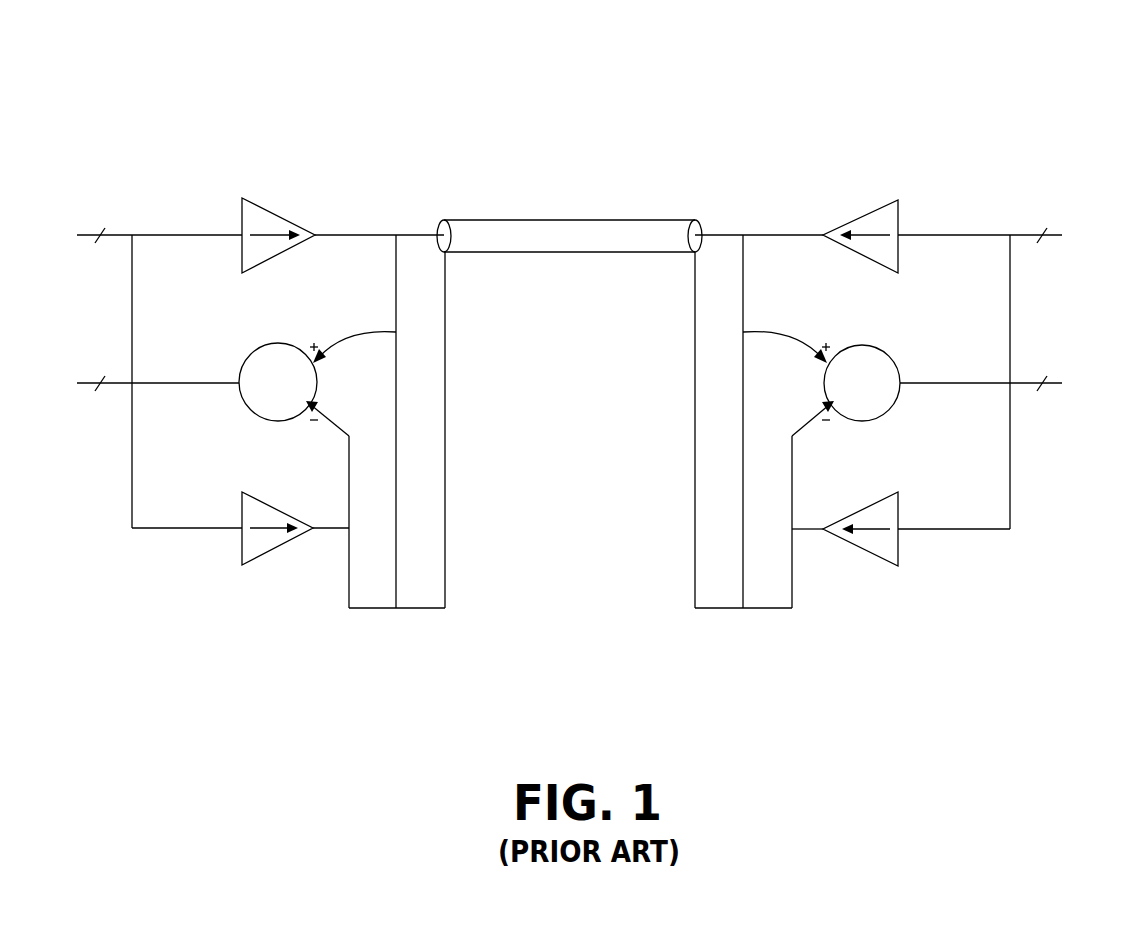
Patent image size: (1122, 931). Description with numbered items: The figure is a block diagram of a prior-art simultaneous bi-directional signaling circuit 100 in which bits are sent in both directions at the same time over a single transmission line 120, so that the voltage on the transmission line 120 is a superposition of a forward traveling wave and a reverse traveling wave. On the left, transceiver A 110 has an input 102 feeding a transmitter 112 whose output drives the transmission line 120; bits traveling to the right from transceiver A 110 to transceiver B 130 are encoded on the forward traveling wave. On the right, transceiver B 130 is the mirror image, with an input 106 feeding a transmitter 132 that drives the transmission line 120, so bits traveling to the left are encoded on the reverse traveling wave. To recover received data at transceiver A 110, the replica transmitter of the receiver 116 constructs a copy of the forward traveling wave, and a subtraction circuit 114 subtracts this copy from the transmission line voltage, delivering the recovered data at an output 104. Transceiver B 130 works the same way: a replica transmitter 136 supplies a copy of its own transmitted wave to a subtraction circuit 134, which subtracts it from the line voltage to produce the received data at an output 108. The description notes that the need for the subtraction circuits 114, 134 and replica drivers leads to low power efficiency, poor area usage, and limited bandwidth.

The simultaneous bi-directional signaling circuit 100 is at (803, 717).
The input of transceiver A 102 is at (143, 247).
The output of transceiver A 104 is at (132, 396).
The input of transceiver B 106 is at (997, 247).
The output of transceiver B 108 is at (1008, 396).
The transceiver A 110 is at (263, 86).
The transmitter 112 is at (268, 208).
The subtraction circuit 114 is at (257, 418).
The receiver 116 is at (263, 574).
The transmission line 120 is at (608, 221).
The transceiver B 130 is at (913, 86).
The transmitter 132 is at (858, 208).
The subtraction circuit 134 is at (885, 418).
The replica transmitter 136 is at (882, 575).